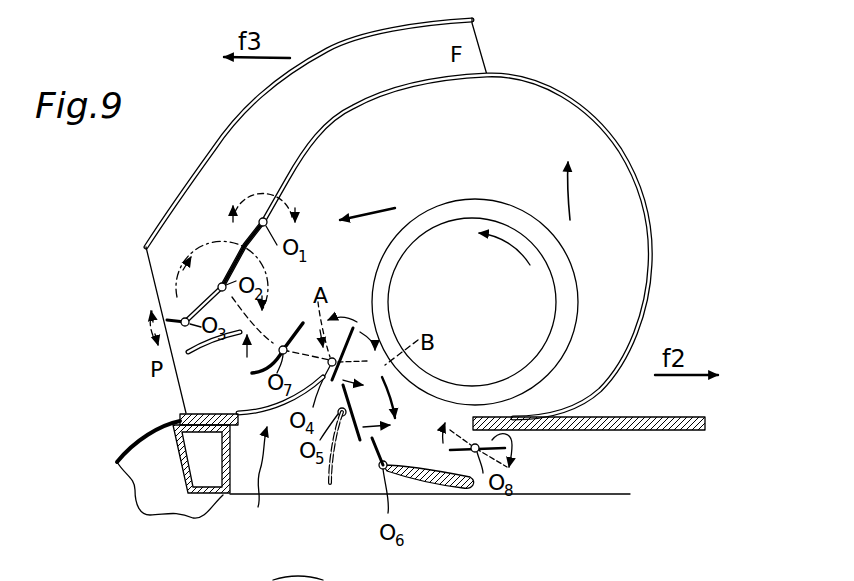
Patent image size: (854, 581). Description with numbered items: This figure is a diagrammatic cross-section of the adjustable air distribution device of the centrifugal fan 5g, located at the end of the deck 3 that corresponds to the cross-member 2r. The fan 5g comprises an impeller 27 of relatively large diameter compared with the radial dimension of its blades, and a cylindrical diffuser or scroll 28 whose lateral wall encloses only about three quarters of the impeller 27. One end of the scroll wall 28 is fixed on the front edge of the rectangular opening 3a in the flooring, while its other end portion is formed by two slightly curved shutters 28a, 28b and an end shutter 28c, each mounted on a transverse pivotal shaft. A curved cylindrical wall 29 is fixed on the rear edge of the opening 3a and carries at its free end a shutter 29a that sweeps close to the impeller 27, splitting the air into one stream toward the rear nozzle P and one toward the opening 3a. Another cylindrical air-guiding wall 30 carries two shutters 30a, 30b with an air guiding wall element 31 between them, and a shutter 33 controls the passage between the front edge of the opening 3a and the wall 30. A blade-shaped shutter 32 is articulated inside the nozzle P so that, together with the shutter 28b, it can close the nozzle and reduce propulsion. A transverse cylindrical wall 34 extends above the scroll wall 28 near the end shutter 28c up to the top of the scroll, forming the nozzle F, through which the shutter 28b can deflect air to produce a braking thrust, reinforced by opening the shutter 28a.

The cross-member 2r is at (200, 472).
The deck 3 is at (663, 428).
The rectangular opening 3a is at (430, 484).
The centrifugal fan 5g is at (210, 145).
The impeller 27 is at (560, 263).
The cylindrical diffuser or scroll 28 is at (607, 139).
The curved shutter 28a is at (263, 200).
The curved shutter 28b is at (228, 258).
The end shutter 28c is at (172, 320).
The curved cylindrical wall 29 is at (247, 413).
The shutter 29a is at (353, 326).
The cylindrical air-guiding wall 30 is at (427, 480).
The shutter 30a is at (345, 403).
The shutter 30b is at (377, 450).
The air guiding wall element 31 is at (330, 480).
The shutter 32 is at (287, 345).
The shutter 33 is at (520, 437).
The transverse cylindrical wall 34 is at (325, 53).